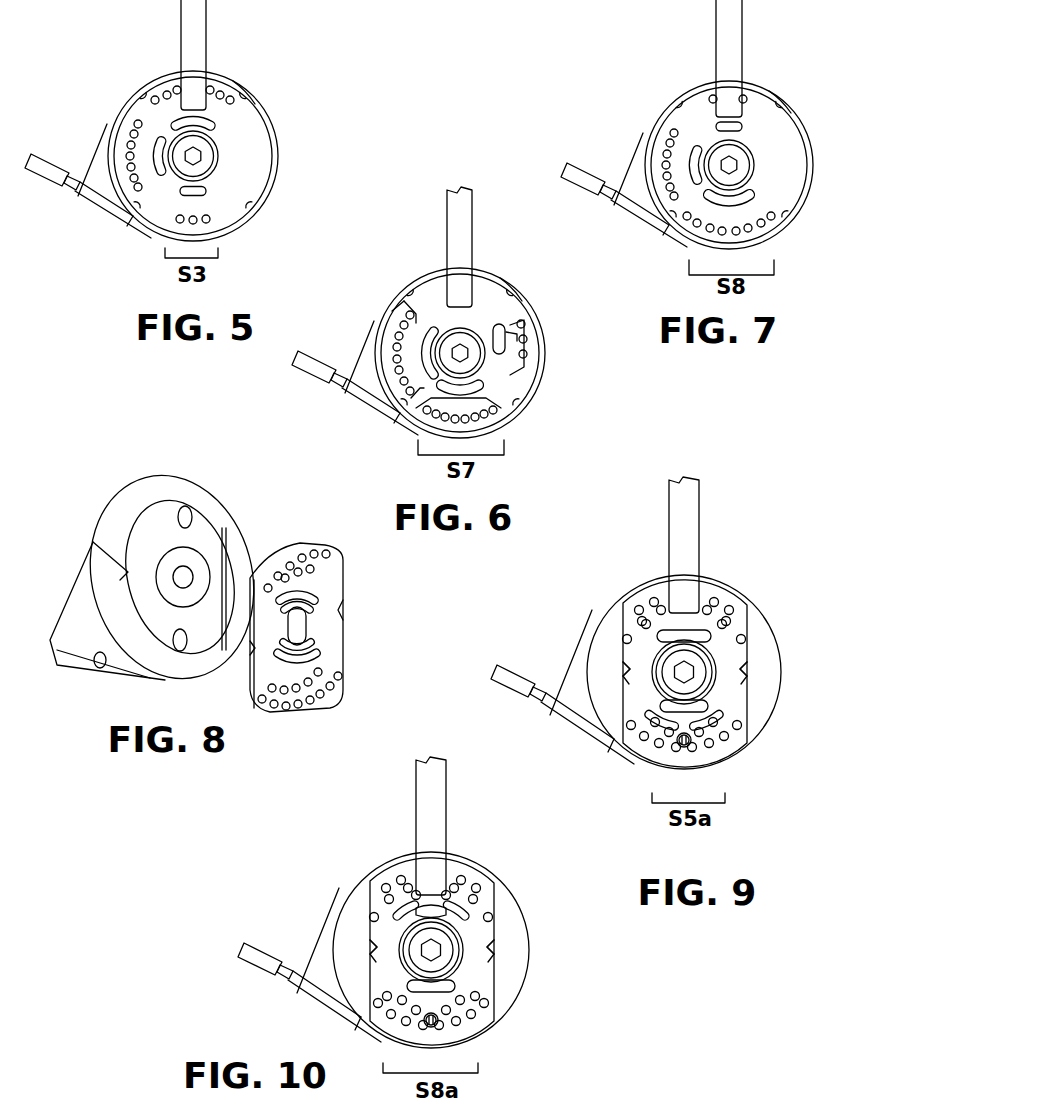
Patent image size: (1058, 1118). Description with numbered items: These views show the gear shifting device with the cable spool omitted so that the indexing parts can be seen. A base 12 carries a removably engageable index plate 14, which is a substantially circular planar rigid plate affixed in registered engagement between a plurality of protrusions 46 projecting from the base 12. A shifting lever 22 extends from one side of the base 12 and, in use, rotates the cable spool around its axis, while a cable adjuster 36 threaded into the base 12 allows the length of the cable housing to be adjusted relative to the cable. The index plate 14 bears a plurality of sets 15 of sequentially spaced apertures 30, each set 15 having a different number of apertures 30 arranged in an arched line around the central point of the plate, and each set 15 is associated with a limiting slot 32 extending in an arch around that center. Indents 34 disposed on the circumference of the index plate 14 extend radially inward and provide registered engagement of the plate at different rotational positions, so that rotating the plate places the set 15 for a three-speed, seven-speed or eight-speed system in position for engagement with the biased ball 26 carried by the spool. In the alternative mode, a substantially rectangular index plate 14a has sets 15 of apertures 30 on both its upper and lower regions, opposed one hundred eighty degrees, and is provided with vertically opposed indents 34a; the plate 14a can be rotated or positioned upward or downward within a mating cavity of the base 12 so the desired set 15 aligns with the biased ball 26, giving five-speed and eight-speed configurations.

In FIG. 5, the base 12 is at (176, 151).
In FIG. 6, the base 12 is at (441, 350).
In FIG. 7, the base 12 is at (712, 165).
In FIG. 8, the base 12 is at (108, 525).
In FIG. 9, the base 12 is at (661, 661).
In FIG. 10, the base 12 is at (406, 945).
In FIG. 5, the index plate 14 is at (221, 156).
In FIG. 6, the index plate 14 is at (495, 353).
In FIG. 7, the index plate 14 is at (755, 165).
In FIG. 8, the rectangular index plate 14a is at (333, 646).
In FIG. 9, the rectangular index plate 14a is at (711, 658).
In FIG. 10, the rectangular index plate 14a is at (457, 925).
In FIG. 6, the set of apertures 15 is at (458, 343).
In FIG. 5, the shifting lever 22 is at (177, 55).
In FIG. 6, the shifting lever 22 is at (436, 247).
In FIG. 7, the shifting lever 22 is at (697, 58).
In FIG. 9, the shifting lever 22 is at (657, 545).
In FIG. 10, the shifting lever 22 is at (402, 826).
In FIG. 9, the biased ball 26 is at (640, 762).
In FIG. 10, the biased ball 26 is at (381, 1040).
In FIG. 5, the apertures 30 is at (203, 170).
In FIG. 6, the apertures 30 is at (479, 383).
In FIG. 7, the apertures 30 is at (743, 179).
In FIG. 8, the apertures 30 is at (325, 668).
In FIG. 9, the apertures 30 is at (706, 700).
In FIG. 10, the apertures 30 is at (453, 967).
In FIG. 5, the limiting slot 32 is at (220, 181).
In FIG. 6, the limiting slot 32 is at (517, 394).
In FIG. 7, the limiting slot 32 is at (750, 189).
In FIG. 8, the limiting slot 32 is at (280, 655).
In FIG. 9, the limiting slot 32 is at (723, 725).
In FIG. 10, the limiting slot 32 is at (470, 958).
In FIG. 5, the indents 34 is at (224, 150).
In FIG. 6, the indents 34 is at (498, 347).
In FIG. 7, the indents 34 is at (771, 159).
In FIG. 8, the vertically opposed indents 34a is at (338, 600).
In FIG. 9, the vertically opposed indents 34a is at (731, 699).
In FIG. 10, the vertically opposed indents 34a is at (478, 966).
In FIG. 5, the cable adjuster 36 is at (49, 139).
In FIG. 6, the cable adjuster 36 is at (319, 343).
In FIG. 7, the cable adjuster 36 is at (574, 159).
In FIG. 9, the cable adjuster 36 is at (518, 658).
In FIG. 10, the cable adjuster 36 is at (242, 939).
In FIG. 5, the protrusions 46 is at (261, 80).
In FIG. 6, the protrusions 46 is at (538, 276).
In FIG. 7, the protrusions 46 is at (804, 93).